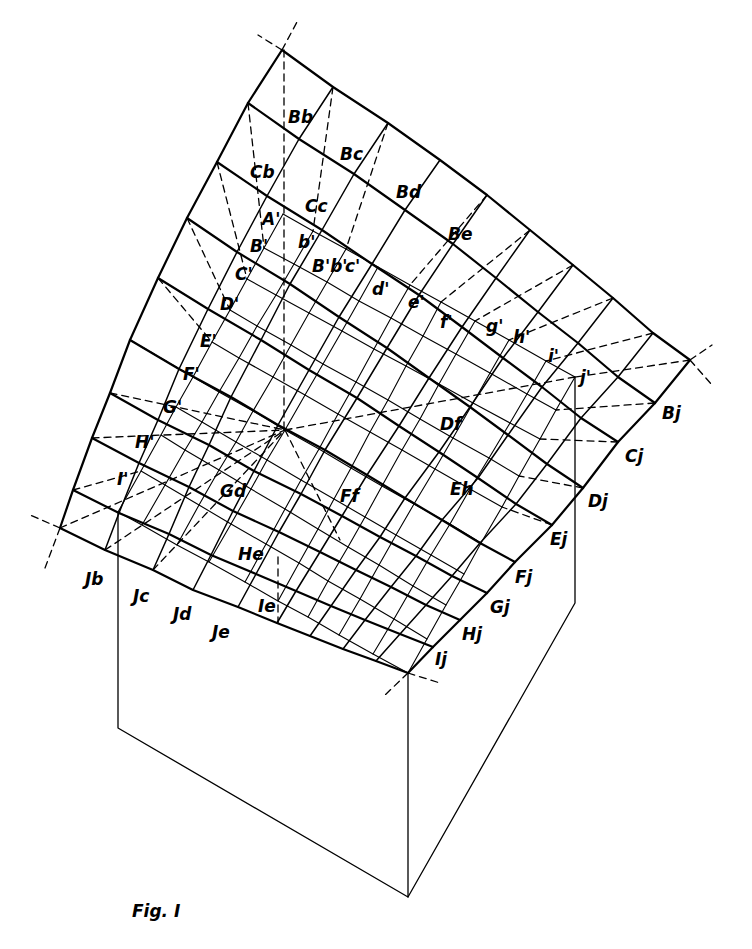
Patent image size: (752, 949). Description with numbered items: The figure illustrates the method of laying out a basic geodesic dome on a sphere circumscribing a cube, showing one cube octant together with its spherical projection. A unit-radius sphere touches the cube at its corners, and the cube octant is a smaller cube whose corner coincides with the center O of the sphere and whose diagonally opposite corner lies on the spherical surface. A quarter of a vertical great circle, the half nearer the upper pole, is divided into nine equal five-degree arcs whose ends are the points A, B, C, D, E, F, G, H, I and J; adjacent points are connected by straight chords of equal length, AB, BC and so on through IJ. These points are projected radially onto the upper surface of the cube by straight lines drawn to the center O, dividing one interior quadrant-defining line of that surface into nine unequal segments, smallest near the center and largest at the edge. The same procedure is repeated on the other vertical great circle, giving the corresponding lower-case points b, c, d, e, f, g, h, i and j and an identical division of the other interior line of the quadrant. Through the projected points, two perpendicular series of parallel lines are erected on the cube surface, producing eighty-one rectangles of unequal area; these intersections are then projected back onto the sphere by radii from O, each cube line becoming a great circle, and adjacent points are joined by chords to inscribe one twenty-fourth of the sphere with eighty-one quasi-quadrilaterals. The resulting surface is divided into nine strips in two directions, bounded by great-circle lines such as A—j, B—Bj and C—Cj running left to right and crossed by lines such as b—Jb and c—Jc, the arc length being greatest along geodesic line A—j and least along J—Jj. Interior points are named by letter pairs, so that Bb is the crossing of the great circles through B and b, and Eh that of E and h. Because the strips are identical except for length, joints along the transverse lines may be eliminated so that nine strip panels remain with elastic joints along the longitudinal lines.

The arc division point A is at (375, 275).
The arc division point J is at (217, 551).
The arc division point j is at (560, 506).
The intersection point Jj is at (346, 637).
The center of the sphere O is at (346, 443).
The arc division point B is at (442, 249).
The arc division point C is at (407, 298).
The arc division point D is at (375, 350).
The arc division point E is at (346, 398).
The arc division point F is at (315, 448).
The arc division point G is at (288, 490).
The arc division point H is at (266, 525).
The arc division point I is at (245, 559).
The arc division point b is at (227, 308).
The arc division point c is at (277, 336).
The arc division point d is at (324, 364).
The arc division point e is at (369, 390).
The arc division point f is at (411, 417).
The arc division point g is at (449, 441).
The arc division point h is at (486, 464).
The arc division point i is at (520, 488).